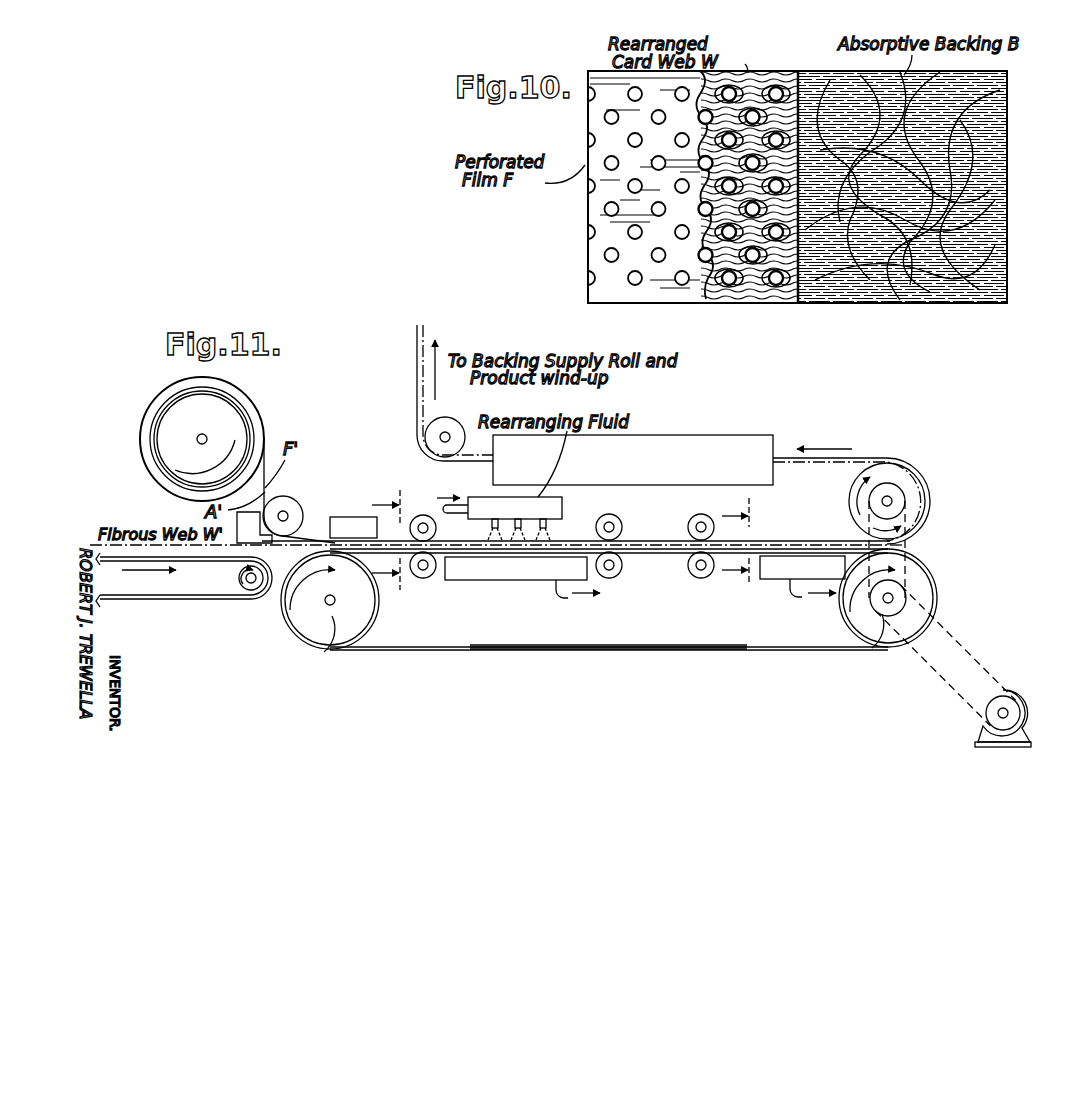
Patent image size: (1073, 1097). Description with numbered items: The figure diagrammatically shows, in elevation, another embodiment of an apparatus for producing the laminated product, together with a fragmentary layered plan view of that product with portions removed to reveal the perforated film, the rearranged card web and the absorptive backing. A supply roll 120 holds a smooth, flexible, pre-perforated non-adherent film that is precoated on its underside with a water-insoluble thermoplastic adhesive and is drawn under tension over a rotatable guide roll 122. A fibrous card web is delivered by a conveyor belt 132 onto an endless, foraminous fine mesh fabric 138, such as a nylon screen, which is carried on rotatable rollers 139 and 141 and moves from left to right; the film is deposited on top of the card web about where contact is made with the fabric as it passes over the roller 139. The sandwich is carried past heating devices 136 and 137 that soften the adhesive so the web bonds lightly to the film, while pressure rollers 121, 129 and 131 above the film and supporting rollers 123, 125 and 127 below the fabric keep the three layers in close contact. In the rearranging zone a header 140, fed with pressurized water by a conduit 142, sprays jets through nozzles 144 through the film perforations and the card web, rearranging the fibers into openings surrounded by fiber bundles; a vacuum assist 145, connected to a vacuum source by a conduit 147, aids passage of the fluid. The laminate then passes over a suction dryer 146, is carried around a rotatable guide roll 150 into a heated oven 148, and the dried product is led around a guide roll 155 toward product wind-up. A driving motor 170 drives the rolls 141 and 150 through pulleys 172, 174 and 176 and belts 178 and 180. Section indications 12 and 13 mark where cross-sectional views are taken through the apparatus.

The supply roll 120 is at (140, 425).
The rotatable guide roll 122 is at (288, 508).
The heating device 136 is at (248, 530).
The conveyor belt 132 is at (182, 602).
The heating device 137 is at (350, 517).
The pressure roller 121 is at (424, 514).
The supporting roller 123 is at (424, 580).
The conduit 142 is at (462, 503).
The header 140 is at (567, 506).
The nozzles 144 is at (548, 525).
The vacuum assist 145 is at (521, 582).
The conduit 147 is at (556, 600).
The pressure roller 129 is at (615, 522).
The pressure roller 131 is at (701, 515).
The supporting roller 125 is at (612, 565).
The supporting roller 127 is at (700, 579).
The suction dryer 146 is at (782, 579).
The heated oven 148 is at (752, 445).
The rotatable guide roll 150 is at (862, 480).
The pulley 176 is at (898, 497).
The belt 180 is at (905, 547).
The pulley 174 is at (898, 606).
The rotatable roller 141 is at (878, 632).
The belt 178 is at (983, 662).
The driving motor 170 is at (1019, 713).
The pulley 172 is at (1017, 722).
The fine mesh fabric 138 is at (572, 650).
The rotatable roller 139 is at (332, 635).
The guide roll 155 is at (456, 415).
The section line 12 is at (386, 545).
The section line 13 is at (735, 544).